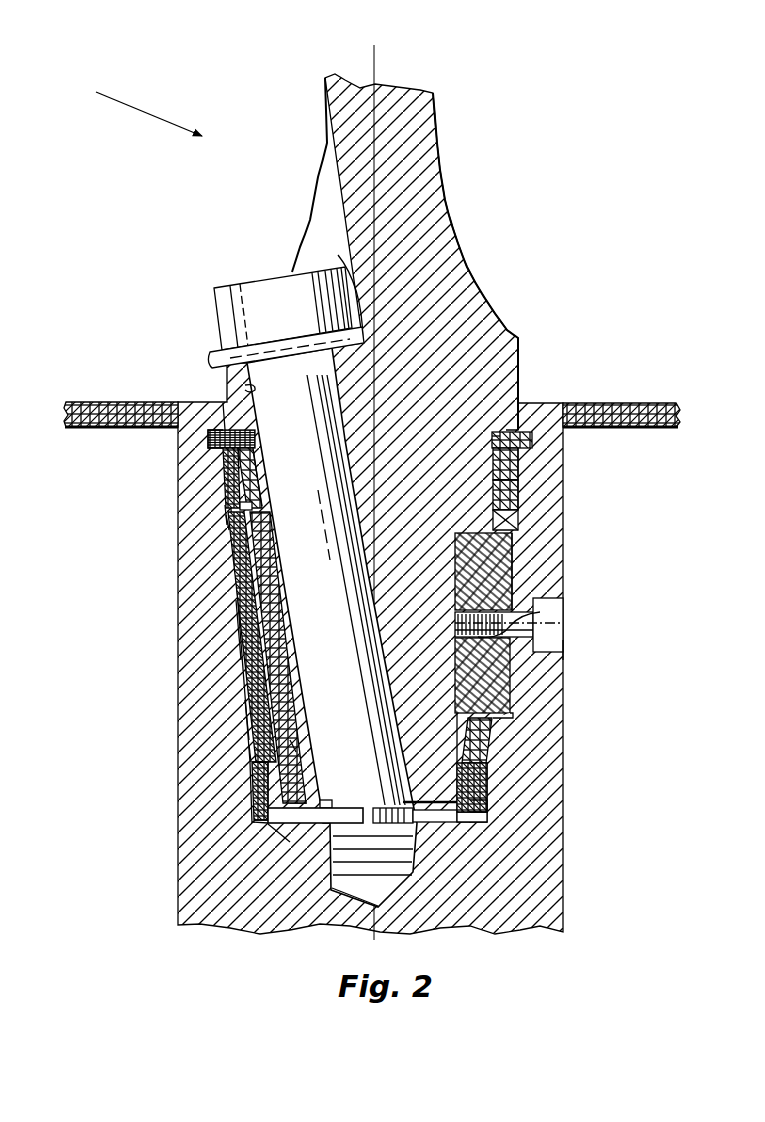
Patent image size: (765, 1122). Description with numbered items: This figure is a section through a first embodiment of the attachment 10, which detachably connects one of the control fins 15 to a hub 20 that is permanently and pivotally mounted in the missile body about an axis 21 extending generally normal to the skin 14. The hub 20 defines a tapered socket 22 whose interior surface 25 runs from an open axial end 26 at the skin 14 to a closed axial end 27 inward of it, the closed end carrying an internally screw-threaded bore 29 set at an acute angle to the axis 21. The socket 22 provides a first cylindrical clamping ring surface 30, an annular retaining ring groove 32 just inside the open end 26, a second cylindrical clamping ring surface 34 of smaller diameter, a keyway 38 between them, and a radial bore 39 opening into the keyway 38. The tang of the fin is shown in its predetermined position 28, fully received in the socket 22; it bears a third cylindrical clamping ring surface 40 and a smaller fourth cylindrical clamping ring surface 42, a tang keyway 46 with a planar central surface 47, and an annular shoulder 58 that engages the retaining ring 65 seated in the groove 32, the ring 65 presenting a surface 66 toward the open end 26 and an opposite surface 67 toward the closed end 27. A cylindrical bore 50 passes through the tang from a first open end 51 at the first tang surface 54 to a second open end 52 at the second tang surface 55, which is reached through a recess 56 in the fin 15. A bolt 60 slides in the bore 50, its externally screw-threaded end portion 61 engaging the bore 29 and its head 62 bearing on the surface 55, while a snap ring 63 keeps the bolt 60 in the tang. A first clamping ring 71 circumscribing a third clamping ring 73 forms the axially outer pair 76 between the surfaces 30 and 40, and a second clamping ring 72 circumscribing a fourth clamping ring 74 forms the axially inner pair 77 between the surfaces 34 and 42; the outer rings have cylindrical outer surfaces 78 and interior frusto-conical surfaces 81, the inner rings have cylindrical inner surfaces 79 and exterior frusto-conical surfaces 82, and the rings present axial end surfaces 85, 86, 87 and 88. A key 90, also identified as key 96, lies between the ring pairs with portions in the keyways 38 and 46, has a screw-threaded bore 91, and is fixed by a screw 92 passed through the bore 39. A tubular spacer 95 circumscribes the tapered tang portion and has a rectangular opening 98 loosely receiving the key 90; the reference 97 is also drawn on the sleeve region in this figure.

The attachment 10 is at (135, 107).
The skin 14 is at (638, 403).
The control fin 15 is at (437, 150).
The hub 20 is at (566, 855).
The axis 21 is at (376, 66).
The socket 22 is at (490, 743).
The interior surface 25 is at (247, 718).
The open axial end 26 is at (519, 398).
The closed axial end 27 is at (457, 822).
The predetermined position 28 is at (268, 582).
The internally screw-threaded bore 29 is at (332, 884).
The first cylindrical clamping ring surface 30 is at (232, 490).
The annular retaining ring groove 32 is at (222, 448).
The second cylindrical clamping ring surface 34 is at (256, 824).
The keyway 38 is at (512, 716).
The bore 39 is at (563, 652).
The third cylindrical clamping ring surface 40 is at (258, 490).
The fourth cylindrical clamping ring surface 42 is at (296, 766).
The tang keyway 46 is at (454, 555).
The planar central surface 47 is at (460, 662).
The cylindrical bore 50 is at (292, 599).
The first open end 51 is at (318, 802).
The second open end 52 is at (244, 387).
The first tang surface 54 is at (305, 818).
The second tang surface 55 is at (343, 272).
The recess 56 is at (325, 185).
The annular shoulder 58 is at (533, 440).
The bolt 60 is at (212, 343).
The externally screw-threaded end portion 61 is at (412, 872).
The bolt head 62 is at (283, 314).
The snap ring 63 is at (428, 820).
The retaining ring 65 is at (494, 438).
The axially disposed surface 66 is at (505, 425).
The opposite axially disposed surface 67 is at (496, 450).
The first clamping ring 71 is at (520, 505).
The second clamping ring 72 is at (488, 812).
The third clamping ring 73 is at (519, 452).
The fourth clamping ring 74 is at (488, 768).
The axially outer pair of clamping rings 76 is at (224, 508).
The axially inner pair of clamping rings 77 is at (252, 795).
The cylindrical outer surfaces 78 is at (226, 470).
The cylindrical inner surfaces 79 is at (252, 470).
The interior frusto-conical surfaces 81 is at (519, 522).
The exterior frusto-conical surfaces 82 is at (519, 485).
The first axial end surface 85 is at (250, 440).
The second axial end surface 86 is at (252, 508).
The third axial end surface 87 is at (292, 748).
The fourth axial end surface 88 is at (292, 840).
The key 90 is at (514, 562).
The screw-threaded bore 91 is at (540, 612).
The screw 92 is at (548, 622).
The tubular spacer 95 is at (236, 648).
The key 96 is at (250, 752).
The sleeve upper edge 97 is at (228, 518).
The rectangular opening 98 is at (460, 720).